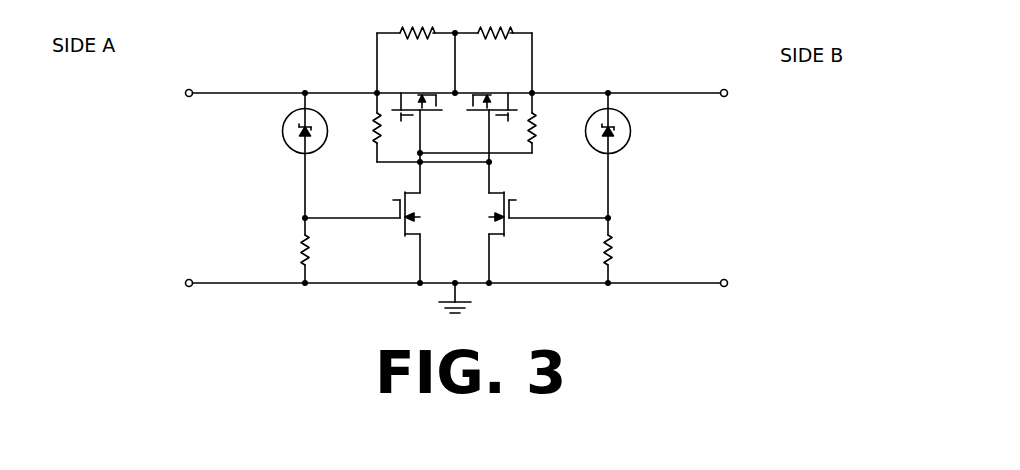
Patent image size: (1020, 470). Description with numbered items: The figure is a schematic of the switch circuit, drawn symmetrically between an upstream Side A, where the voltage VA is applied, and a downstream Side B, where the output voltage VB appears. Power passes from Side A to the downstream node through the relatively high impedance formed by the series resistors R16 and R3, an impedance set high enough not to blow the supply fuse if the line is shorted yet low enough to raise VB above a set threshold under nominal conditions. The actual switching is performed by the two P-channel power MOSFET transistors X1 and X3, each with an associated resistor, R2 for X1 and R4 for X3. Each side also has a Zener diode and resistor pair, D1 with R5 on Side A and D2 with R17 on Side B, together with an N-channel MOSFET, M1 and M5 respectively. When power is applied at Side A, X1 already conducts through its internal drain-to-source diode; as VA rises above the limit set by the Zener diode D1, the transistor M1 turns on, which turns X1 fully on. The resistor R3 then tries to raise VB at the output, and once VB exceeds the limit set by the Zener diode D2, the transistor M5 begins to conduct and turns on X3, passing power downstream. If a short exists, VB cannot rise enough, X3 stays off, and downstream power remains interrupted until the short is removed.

The resistor R16 is at (417, 22).
The resistor R3 is at (495, 22).
The resistor R2 is at (363, 127).
The resistor R4 is at (548, 123).
The P-Channel Power MOSFET transistor X1 is at (417, 115).
The P-Channel Power MOSFET transistor X3 is at (492, 115).
The Zener Diode D1 is at (290, 155).
The Zener Diode D2 is at (625, 155).
The resistor R5 is at (290, 250).
The resistor R17 is at (627, 250).
The N-Channel MOSFET transistor M1 is at (377, 222).
The N-Channel MOSFET transistor M5 is at (534, 222).
The voltage VA is at (192, 192).
The voltage VB is at (723, 193).